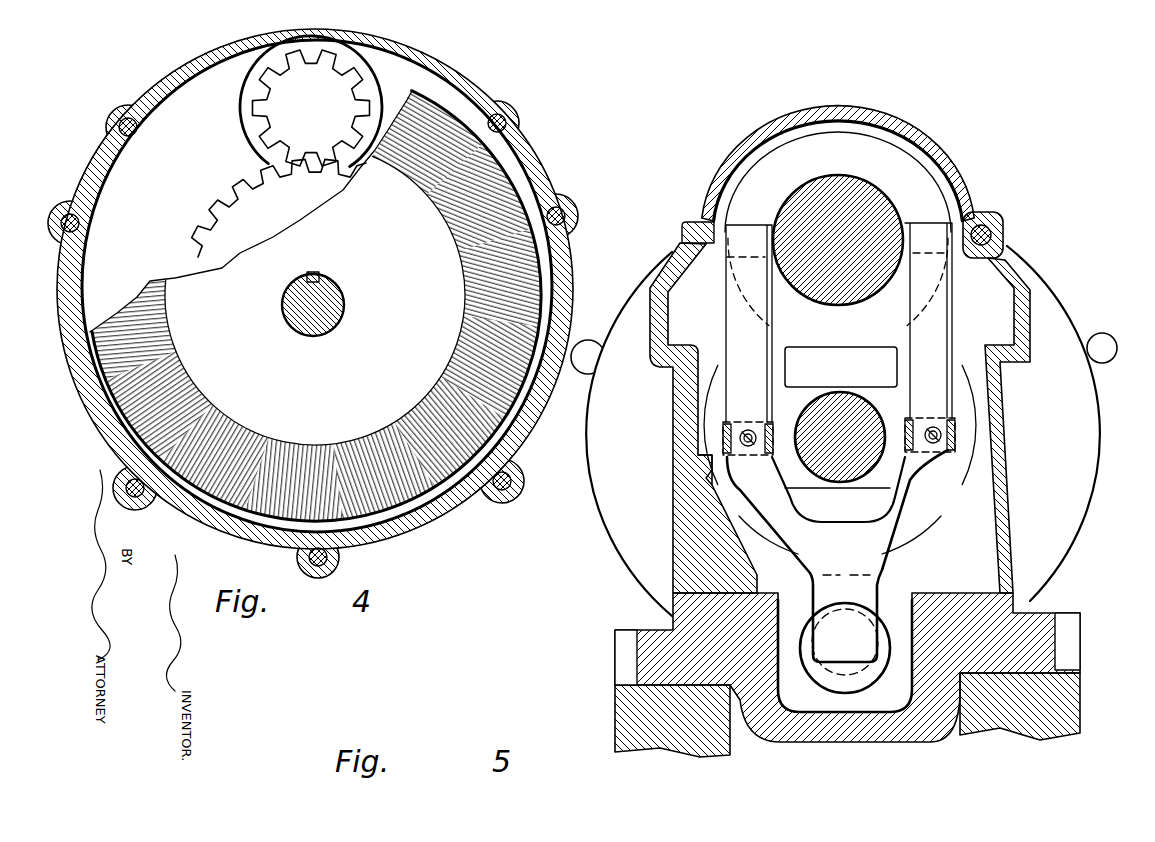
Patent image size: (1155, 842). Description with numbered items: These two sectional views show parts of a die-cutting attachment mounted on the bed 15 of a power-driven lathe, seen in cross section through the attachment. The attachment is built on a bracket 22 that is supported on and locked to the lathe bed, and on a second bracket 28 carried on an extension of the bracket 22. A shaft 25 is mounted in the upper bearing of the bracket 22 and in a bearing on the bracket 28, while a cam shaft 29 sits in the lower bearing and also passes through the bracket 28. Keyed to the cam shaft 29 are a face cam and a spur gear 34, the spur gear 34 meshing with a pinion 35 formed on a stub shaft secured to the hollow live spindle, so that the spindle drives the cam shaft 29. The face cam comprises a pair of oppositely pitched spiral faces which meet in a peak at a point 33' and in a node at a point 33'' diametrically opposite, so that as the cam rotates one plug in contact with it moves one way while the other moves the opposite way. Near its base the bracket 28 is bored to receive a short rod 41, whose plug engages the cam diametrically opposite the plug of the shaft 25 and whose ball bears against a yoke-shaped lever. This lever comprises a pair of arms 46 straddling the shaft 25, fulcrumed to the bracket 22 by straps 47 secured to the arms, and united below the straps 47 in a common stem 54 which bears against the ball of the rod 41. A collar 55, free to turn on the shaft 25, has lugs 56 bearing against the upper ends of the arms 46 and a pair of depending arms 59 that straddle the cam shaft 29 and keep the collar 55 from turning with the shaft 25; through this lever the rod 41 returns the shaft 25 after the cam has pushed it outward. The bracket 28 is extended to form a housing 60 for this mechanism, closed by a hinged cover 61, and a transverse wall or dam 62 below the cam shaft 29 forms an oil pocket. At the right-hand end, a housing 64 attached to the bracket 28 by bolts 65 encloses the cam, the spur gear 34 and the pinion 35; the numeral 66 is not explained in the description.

In FIG. 5, the bed 15 is at (1078, 706).
In FIG. 5, the bracket 22 is at (1060, 614).
In FIG. 5, the shaft 25 is at (822, 192).
In FIG. 5, the bracket 28 is at (690, 563).
In FIG. 4, the cam shaft 29 is at (302, 300).
In FIG. 5, the cam shaft 29 is at (848, 474).
In FIG. 4, the peak 33' is at (157, 330).
In FIG. 4, the node 33'' is at (324, 306).
In FIG. 4, the spur gear 34 is at (262, 208).
In FIG. 5, the spur gear 34 is at (710, 407).
In FIG. 4, the pinion 35 is at (270, 105).
In FIG. 5, the short rod 41 is at (862, 668).
In FIG. 5, the arms 46 is at (734, 341).
In FIG. 5, the straps 47 is at (742, 454).
In FIG. 5, the stem 54 is at (812, 588).
In FIG. 5, the collar 55 is at (758, 192).
In FIG. 5, the lugs 56 is at (746, 236).
In FIG. 5, the depending arms 59 is at (895, 398).
In FIG. 5, the housing 60 is at (996, 414).
In FIG. 5, the hinged cover 61 is at (884, 110).
In FIG. 5, the wall or dam 62 is at (846, 523).
In FIG. 4, the housing 64 is at (433, 526).
In FIG. 4, the bolts 65 is at (137, 498).
In FIG. 4, the casing 66 is at (150, 103).
In FIG. 5, the casing 66 is at (1098, 516).